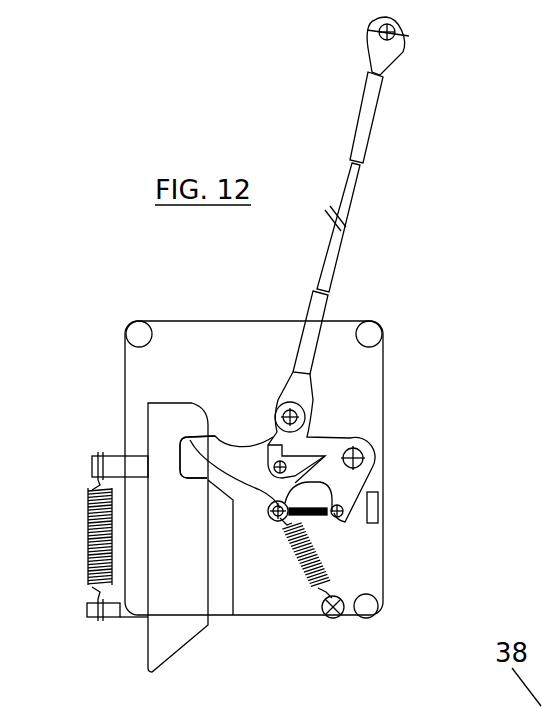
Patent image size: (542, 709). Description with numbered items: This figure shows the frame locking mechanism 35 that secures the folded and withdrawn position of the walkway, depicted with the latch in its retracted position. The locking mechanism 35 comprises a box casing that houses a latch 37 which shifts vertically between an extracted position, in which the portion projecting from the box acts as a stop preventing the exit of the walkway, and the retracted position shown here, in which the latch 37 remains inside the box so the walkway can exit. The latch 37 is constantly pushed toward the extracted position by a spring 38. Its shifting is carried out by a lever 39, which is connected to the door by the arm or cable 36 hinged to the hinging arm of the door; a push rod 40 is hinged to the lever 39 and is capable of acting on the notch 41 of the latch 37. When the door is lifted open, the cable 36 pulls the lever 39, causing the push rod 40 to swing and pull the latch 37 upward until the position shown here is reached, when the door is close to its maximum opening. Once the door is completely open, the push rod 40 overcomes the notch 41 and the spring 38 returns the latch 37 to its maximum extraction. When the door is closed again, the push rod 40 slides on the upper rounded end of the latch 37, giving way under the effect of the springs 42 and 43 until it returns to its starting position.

The locking mechanism 35 is at (383, 360).
The lever 36 is at (347, 190).
The latch 37 is at (173, 633).
The spring 38 is at (98, 540).
The lever 39 is at (342, 437).
The push rod 40 is at (224, 445).
The notch 41 is at (190, 458).
The spring 42 is at (315, 507).
The spring 43 is at (322, 572).